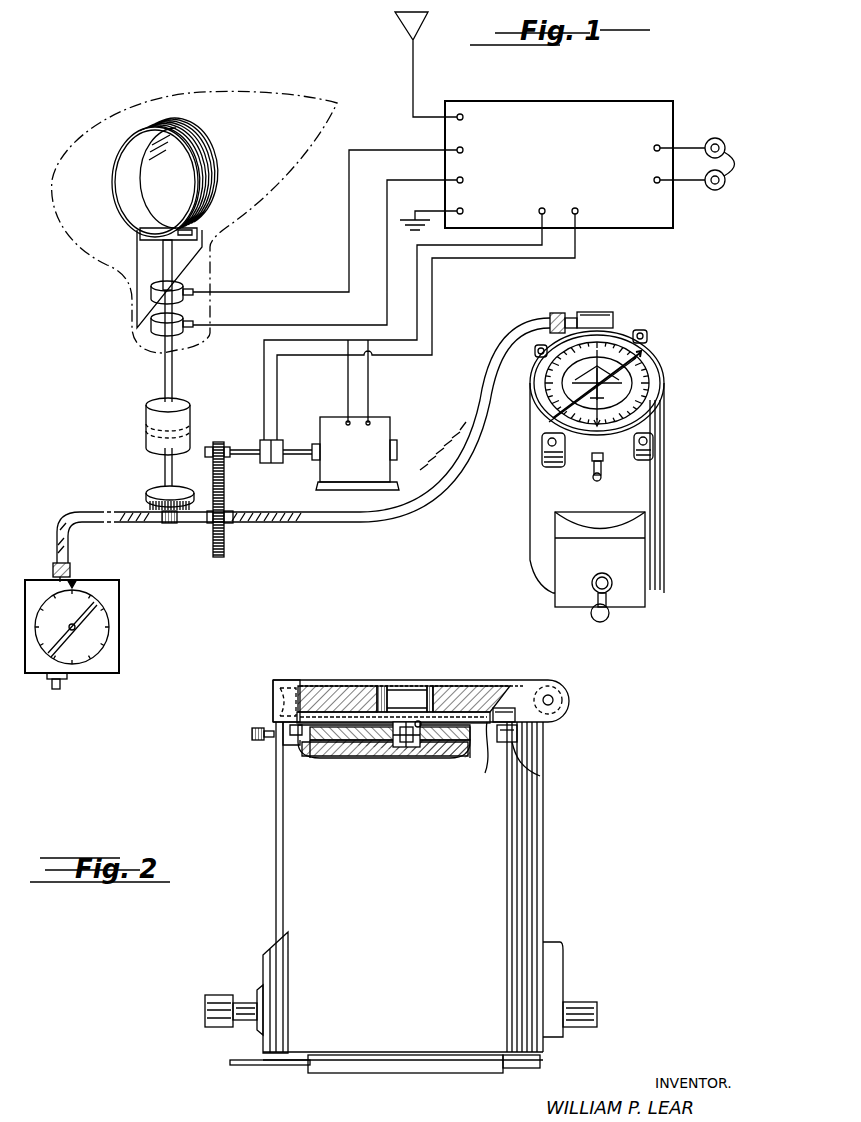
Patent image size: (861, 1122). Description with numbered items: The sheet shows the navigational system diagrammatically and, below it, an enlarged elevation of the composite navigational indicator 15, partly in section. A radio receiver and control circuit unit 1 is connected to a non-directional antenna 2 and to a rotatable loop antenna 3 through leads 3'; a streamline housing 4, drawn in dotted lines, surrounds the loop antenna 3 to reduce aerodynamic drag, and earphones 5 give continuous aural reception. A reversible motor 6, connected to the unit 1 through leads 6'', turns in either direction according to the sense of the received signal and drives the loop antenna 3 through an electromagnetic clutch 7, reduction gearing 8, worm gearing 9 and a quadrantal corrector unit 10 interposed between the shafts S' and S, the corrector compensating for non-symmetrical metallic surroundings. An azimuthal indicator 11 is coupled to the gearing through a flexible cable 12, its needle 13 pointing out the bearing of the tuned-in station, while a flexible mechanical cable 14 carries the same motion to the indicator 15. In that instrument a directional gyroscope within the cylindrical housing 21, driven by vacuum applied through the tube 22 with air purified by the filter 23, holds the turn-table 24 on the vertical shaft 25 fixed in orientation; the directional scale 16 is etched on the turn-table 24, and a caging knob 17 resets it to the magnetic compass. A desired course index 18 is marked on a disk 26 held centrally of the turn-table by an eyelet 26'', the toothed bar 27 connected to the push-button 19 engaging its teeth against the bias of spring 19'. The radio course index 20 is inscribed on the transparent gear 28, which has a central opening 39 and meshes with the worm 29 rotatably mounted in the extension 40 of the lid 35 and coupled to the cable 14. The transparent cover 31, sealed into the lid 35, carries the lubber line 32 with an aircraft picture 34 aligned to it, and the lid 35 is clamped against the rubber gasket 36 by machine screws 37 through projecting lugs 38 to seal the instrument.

In FIG. 1, the radio receiver and control circuit unit 1 is at (617, 229).
In FIG. 1, the non-directional antenna 2 is at (392, 26).
In FIG. 1, the loop antenna 3 is at (167, 177).
In FIG. 1, the leads 3' is at (325, 237).
In FIG. 1, the streamline housing 4 is at (268, 170).
In FIG. 1, the earphones 5 is at (715, 138).
In FIG. 1, the reversible motor 6 is at (355, 436).
In FIG. 1, the motor leads 6'' is at (419, 327).
In FIG. 1, the electromagnetic clutch 7 is at (262, 446).
In FIG. 1, the reduction gearing 8 is at (226, 490).
In FIG. 1, the worm gearing 9 is at (150, 496).
In FIG. 1, the quadrantal corrector unit 10 is at (146, 424).
In FIG. 1, the azimuthal indicator 11 is at (119, 608).
In FIG. 1, the flexible cable 12 is at (72, 532).
In FIG. 1, the indicator needle 13 is at (79, 620).
In FIG. 1, the flexible mechanical cable 14 is at (290, 522).
In FIG. 1, the composite navigational indicator 15 is at (521, 452).
In FIG. 2, the composite navigational indicator 15 is at (255, 714).
In FIG. 1, the directional scale 16 is at (650, 380).
In FIG. 1, the caging knob 17 is at (607, 616).
In FIG. 2, the caging knob 17 is at (218, 996).
In FIG. 1, the desired course index 18 is at (545, 375).
In FIG. 1, the push-button 19 is at (578, 473).
In FIG. 2, the push-button 19 is at (244, 763).
In FIG. 2, the spring 19' is at (275, 766).
In FIG. 1, the radio course index 20 is at (645, 354).
In FIG. 1, the cylindrical housing 21 is at (626, 507).
In FIG. 2, the cylindrical housing 21 is at (415, 936).
In FIG. 2, the tube 22 is at (580, 1004).
In FIG. 2, the air filter 23 is at (312, 1072).
In FIG. 2, the turn-table 24 is at (472, 690).
In FIG. 2, the vertical shaft 25 is at (402, 747).
In FIG. 1, the disk 26 is at (638, 386).
In FIG. 2, the disk 26 is at (442, 678).
In FIG. 2, the dial ring 26'' is at (437, 755).
In FIG. 2, the toothed bar 27 is at (322, 690).
In FIG. 2, the transparent gear 28 is at (390, 690).
In FIG. 2, the worm 29 is at (570, 698).
In FIG. 2, the transparent cover 31 is at (365, 686).
In FIG. 1, the lubber line 32 is at (620, 346).
In FIG. 1, the picture of an aircraft 34 is at (551, 416).
In FIG. 2, the lid 35 is at (280, 680).
In FIG. 2, the rubber gasket 36 is at (520, 738).
In FIG. 2, the machine screws 37 is at (520, 758).
In FIG. 1, the lugs 38 is at (648, 337).
In FIG. 2, the lugs 38 is at (485, 750).
In FIG. 2, the opening 39 is at (360, 752).
In FIG. 1, the extension 40 is at (601, 312).
In FIG. 2, the extension 40 is at (520, 716).
In FIG. 1, the shaft S is at (162, 315).
In FIG. 1, the shaft S' is at (143, 464).